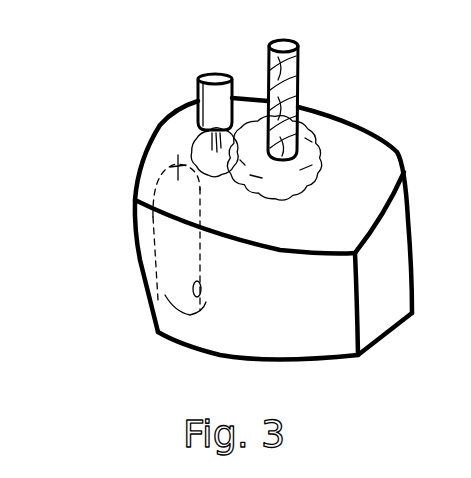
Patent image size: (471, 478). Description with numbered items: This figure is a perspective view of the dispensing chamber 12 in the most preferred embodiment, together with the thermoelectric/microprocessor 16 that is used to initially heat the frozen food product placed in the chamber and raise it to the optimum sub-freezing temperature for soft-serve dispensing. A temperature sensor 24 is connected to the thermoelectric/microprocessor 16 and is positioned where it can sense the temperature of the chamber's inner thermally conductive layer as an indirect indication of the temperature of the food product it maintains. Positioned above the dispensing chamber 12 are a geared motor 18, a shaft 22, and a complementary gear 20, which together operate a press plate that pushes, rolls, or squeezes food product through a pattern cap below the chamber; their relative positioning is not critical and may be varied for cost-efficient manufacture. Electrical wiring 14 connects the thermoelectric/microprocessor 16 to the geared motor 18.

The dispensing chamber 12 is at (451, 150).
The electrical wiring 14 is at (178, 108).
The thermoelectric/microprocessor 16 is at (115, 257).
The geared motor 18 is at (229, 71).
The complementary gear 20 is at (310, 157).
The shaft 22 is at (290, 92).
The temperature sensor 24 is at (195, 290).